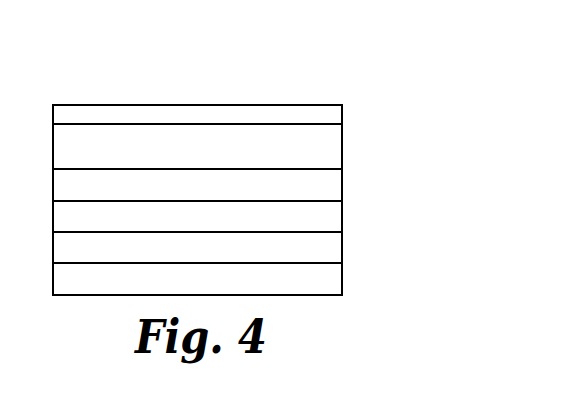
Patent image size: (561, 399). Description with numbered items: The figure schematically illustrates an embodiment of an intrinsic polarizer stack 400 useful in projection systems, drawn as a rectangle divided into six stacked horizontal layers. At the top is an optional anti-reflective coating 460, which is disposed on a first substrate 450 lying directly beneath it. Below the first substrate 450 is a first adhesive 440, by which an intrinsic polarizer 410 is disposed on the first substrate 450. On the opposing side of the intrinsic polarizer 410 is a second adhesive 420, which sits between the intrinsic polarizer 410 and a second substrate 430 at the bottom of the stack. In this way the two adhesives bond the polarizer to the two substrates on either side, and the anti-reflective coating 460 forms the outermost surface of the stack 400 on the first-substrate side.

The intrinsic polarizer stack 400 is at (305, 73).
The anti-reflective coating 460 is at (335, 111).
The first substrate 450 is at (335, 152).
The first adhesive 440 is at (335, 190).
The intrinsic polarizer 410 is at (335, 221).
The second adhesive 420 is at (335, 251).
The second substrate 430 is at (335, 282).